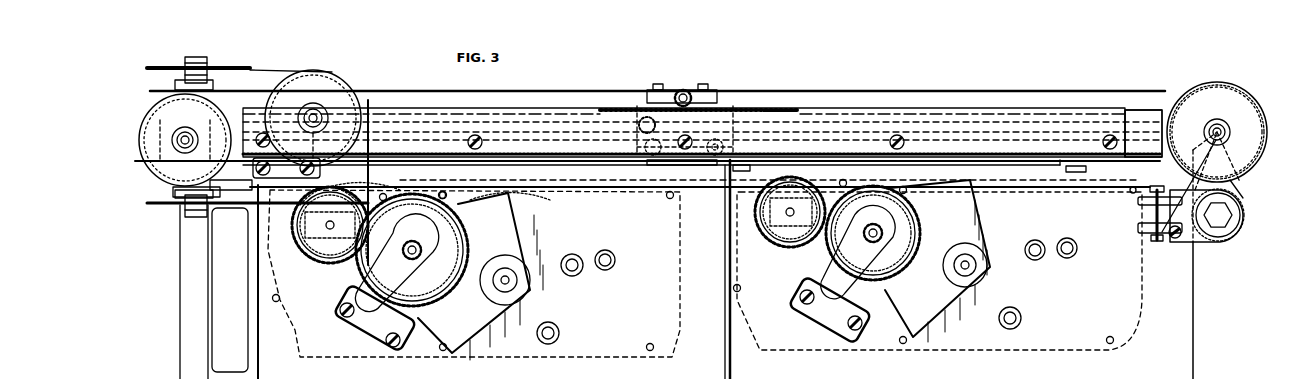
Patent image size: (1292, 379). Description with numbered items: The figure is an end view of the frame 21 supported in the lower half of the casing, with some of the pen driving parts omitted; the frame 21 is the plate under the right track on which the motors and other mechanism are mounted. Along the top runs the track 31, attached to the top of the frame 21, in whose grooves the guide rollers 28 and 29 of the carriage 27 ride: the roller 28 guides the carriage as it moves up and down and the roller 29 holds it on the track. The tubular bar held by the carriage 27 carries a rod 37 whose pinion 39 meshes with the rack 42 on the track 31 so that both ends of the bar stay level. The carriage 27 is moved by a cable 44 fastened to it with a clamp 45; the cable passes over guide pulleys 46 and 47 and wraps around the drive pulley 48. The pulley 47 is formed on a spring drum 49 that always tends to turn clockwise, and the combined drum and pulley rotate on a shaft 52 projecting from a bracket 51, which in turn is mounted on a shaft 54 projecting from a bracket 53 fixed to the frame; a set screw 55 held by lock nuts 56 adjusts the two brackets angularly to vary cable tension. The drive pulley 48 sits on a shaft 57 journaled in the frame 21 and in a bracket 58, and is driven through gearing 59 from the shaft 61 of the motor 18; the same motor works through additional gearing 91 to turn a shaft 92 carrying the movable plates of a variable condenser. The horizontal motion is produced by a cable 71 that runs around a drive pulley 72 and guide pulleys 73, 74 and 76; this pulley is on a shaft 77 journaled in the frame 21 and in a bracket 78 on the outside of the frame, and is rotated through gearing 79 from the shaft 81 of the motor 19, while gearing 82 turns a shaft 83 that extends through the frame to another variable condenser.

The motor 18 is at (783, 302).
The motor 19 is at (302, 323).
The frame 21 is at (1185, 326).
The carriage 27 is at (723, 105).
The guide roller 28 is at (633, 130).
The guide roller 29 is at (725, 147).
The track 31 is at (1137, 122).
The rod 37 is at (683, 90).
The pinion 39 is at (648, 95).
The rack 42 is at (617, 108).
The cable 44 is at (897, 92).
The clamp 45 is at (720, 98).
The guide pulley 46 is at (156, 164).
The guide pulley 47 is at (1213, 87).
The drive pulley 48 is at (912, 227).
The spring drum 49 is at (1235, 97).
The bracket 51 is at (1237, 189).
The shaft 52 is at (1224, 133).
The bracket 53 is at (1200, 242).
The shaft 54 is at (1227, 213).
The set screw 55 is at (1157, 242).
The lock nuts 56 is at (1138, 210).
The shaft 57 is at (870, 242).
The bracket 58 is at (812, 275).
The gearing 59 is at (768, 243).
The motor shaft 61 is at (786, 213).
The cable 71 is at (277, 68).
The drive pulley 72 is at (457, 234).
The guide pulley 73 is at (332, 75).
The guide pulley 74 is at (162, 62).
The guide pulley 76 is at (158, 208).
The shaft 77 is at (408, 258).
The bracket 78 is at (363, 327).
The gearing 79 is at (310, 258).
The motor shaft 81 is at (326, 226).
The gearing 82 is at (503, 210).
The shaft 83 is at (510, 283).
The gearing 91 is at (975, 217).
The shaft 92 is at (968, 267).